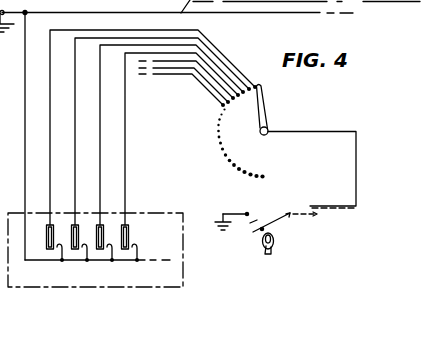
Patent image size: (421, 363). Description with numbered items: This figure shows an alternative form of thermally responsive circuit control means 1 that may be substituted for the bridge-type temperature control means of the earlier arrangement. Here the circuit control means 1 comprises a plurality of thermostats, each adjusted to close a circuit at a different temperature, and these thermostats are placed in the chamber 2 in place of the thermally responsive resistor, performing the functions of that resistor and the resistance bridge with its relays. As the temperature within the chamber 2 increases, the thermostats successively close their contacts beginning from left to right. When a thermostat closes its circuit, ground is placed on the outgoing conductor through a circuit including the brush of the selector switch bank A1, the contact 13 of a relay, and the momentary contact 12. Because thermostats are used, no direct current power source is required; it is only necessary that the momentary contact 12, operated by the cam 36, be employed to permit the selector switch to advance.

The thermally responsive circuit control means 1 is at (145, 265).
The chamber 2 is at (161, 212).
The momentary contact 12 is at (265, 209).
The contact of relay 13 is at (311, 207).
The cam 36 is at (263, 247).
The selector switch bank A1 is at (242, 132).